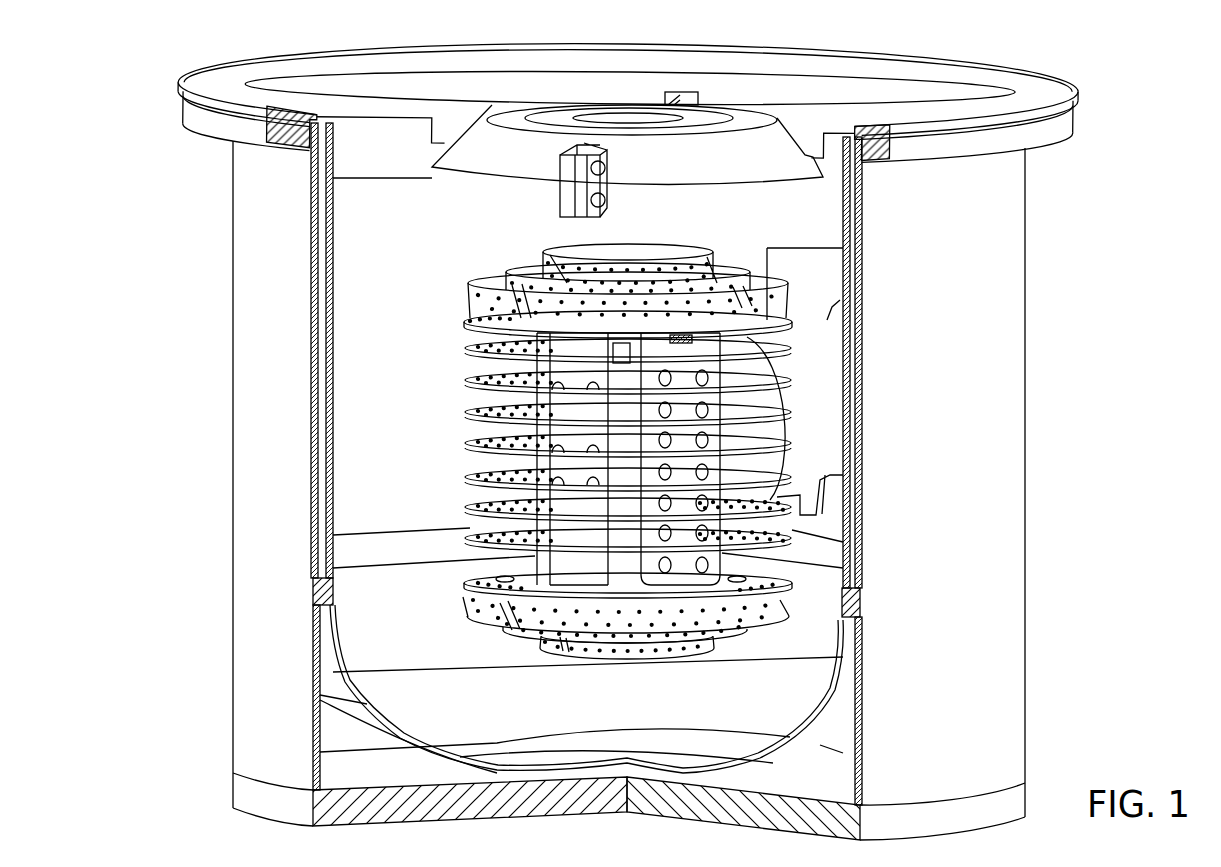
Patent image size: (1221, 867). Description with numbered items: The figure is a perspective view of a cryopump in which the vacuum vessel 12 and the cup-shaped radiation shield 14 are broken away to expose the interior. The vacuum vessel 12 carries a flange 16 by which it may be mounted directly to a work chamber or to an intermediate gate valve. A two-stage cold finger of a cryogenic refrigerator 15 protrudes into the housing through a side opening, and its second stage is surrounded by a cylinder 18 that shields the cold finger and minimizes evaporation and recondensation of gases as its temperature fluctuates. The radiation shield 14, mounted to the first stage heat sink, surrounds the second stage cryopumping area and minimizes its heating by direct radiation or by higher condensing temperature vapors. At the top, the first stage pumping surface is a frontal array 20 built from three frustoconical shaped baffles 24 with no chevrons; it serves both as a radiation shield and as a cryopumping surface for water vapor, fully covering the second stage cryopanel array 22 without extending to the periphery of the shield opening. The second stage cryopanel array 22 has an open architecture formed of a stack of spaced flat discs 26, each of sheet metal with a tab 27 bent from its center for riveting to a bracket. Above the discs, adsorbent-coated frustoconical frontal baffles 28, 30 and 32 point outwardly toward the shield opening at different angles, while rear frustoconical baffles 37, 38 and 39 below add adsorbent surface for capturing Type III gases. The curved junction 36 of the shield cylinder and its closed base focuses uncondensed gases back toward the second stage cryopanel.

The vacuum vessel 12 is at (1012, 668).
The radiation shield 14 is at (849, 738).
The cryogenic refrigerator 15 is at (628, 459).
The flange 16 is at (1074, 90).
The cylinder 18 is at (840, 414).
The frontal array 20 is at (779, 112).
The second stage cryopanel array 22 is at (408, 303).
The frustoconical shaped baffles 24 is at (523, 117).
The flat discs 26 is at (465, 477).
The tab 27 is at (712, 375).
The frontal baffle 28 is at (707, 250).
The frontal baffle 30 is at (729, 273).
The frontal baffle 32 is at (771, 287).
The junction 36 is at (402, 722).
The rear frustoconical baffle 37 is at (470, 616).
The rear frustoconical baffle 38 is at (515, 633).
The rear frustoconical baffle 39 is at (548, 655).